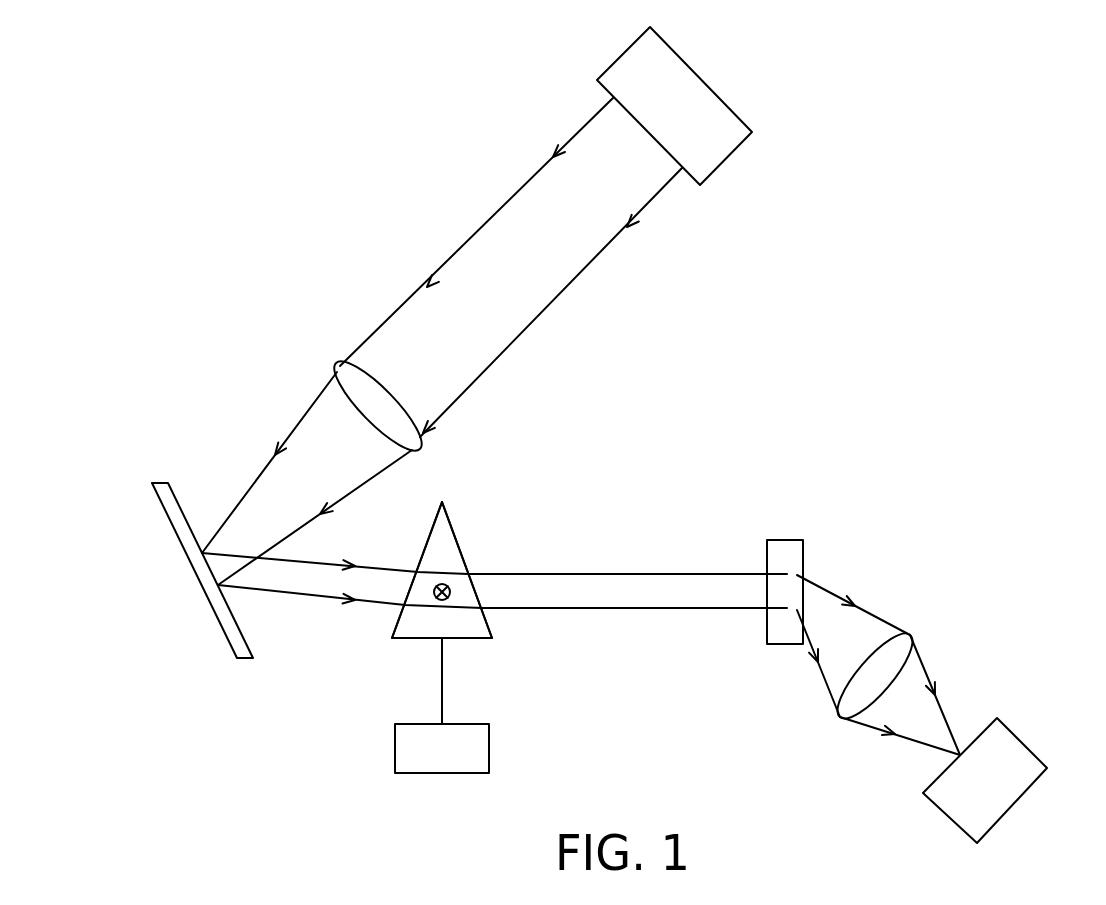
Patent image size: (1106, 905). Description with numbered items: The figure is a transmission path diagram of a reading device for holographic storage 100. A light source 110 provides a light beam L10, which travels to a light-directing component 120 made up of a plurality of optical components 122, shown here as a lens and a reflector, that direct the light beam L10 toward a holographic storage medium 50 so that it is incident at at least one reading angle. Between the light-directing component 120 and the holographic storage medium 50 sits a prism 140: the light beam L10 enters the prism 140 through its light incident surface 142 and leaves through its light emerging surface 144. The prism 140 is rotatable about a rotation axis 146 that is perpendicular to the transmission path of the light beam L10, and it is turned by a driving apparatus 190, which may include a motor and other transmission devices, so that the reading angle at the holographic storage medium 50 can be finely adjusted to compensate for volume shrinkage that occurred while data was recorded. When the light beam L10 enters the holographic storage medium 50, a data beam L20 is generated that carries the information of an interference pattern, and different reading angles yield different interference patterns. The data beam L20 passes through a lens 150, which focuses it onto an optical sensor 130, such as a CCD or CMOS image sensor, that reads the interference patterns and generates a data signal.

The reading device for holographic storage 100 is at (1083, 861).
The light source 110 is at (705, 98).
The light beam L10 is at (405, 308).
The light-directing component 120 is at (138, 337).
The optical component 122 is at (338, 368).
The prism 140 is at (466, 626).
The light incident surface 142 is at (397, 617).
The light emerging surface 144 is at (488, 622).
The rotation axis 146 is at (450, 589).
The driving apparatus 190 is at (477, 747).
The holographic storage medium 50 is at (775, 635).
The data beam L20 is at (872, 627).
The lens 150 is at (845, 712).
The optical sensor 130 is at (1012, 750).